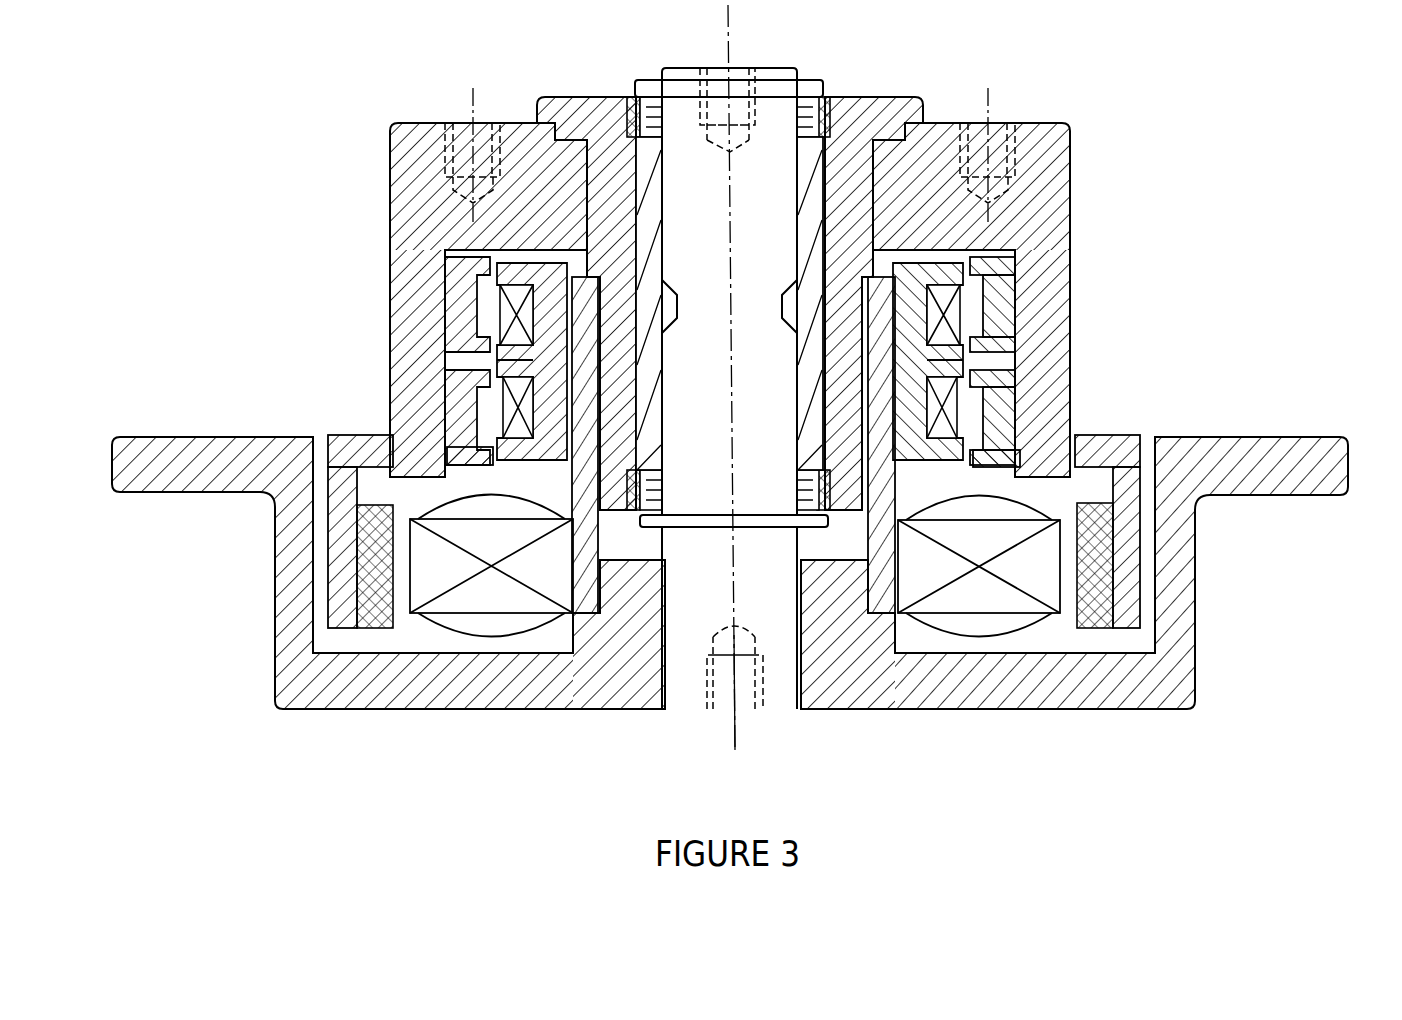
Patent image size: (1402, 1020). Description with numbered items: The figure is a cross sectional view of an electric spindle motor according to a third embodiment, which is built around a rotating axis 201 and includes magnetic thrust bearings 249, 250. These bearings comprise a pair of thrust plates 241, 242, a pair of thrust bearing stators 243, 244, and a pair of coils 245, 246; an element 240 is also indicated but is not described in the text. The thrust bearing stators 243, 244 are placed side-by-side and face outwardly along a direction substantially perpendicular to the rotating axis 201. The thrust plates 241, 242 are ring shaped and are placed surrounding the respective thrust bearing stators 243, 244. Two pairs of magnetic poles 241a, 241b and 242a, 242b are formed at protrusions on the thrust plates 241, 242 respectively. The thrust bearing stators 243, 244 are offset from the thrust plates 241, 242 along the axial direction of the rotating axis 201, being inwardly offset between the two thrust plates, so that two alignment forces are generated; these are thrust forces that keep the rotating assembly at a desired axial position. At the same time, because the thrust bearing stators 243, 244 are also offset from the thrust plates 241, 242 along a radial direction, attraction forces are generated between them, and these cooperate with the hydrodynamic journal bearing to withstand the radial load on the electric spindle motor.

The rotating axis 201 is at (735, 732).
The armature sleeve 240 is at (393, 330).
The thrust plate 241 is at (1007, 267).
The magnetic pole 241a is at (1017, 238).
The magnetic pole 241b is at (1017, 342).
The thrust plate 242 is at (1010, 395).
The magnetic pole 242a is at (1017, 372).
The magnetic pole 242b is at (982, 460).
The thrust bearing stator 243 is at (500, 264).
The thrust bearing stator 244 is at (540, 422).
The coil 245 is at (955, 313).
The coil 246 is at (957, 410).
The magnetic thrust bearing 249 is at (490, 305).
The magnetic thrust bearing 250 is at (493, 390).